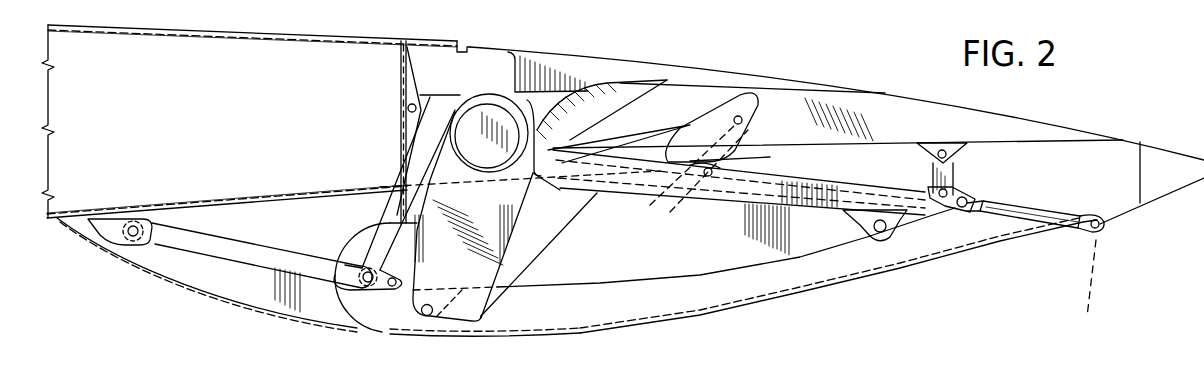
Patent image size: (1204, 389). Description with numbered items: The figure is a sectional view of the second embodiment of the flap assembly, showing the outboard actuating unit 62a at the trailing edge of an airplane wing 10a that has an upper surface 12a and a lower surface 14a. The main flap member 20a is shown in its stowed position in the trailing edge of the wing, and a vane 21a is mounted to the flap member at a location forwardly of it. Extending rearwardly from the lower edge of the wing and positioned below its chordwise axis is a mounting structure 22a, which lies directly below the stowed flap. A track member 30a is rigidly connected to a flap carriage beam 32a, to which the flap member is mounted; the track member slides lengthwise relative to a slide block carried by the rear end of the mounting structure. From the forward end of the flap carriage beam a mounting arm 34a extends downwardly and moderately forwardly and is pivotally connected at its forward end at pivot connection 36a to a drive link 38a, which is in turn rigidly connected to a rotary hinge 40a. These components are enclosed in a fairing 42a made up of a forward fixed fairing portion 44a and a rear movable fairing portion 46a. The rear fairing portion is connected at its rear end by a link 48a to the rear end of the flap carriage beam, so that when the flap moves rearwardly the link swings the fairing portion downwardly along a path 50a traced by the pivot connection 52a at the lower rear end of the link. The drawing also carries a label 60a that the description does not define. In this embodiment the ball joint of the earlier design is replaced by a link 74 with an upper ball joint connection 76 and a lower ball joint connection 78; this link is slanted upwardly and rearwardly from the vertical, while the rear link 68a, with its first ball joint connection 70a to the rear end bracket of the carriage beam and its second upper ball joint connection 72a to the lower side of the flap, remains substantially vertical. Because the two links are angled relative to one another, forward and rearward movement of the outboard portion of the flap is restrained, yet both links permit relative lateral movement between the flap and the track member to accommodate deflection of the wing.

The airplane wing 10a is at (283, 31).
The upper surface 12a is at (227, 31).
The lower surface 14a is at (317, 207).
The main flap member 20a is at (967, 110).
The vane 21a is at (573, 100).
The mounting structure 22a is at (620, 282).
The track member 30a is at (660, 197).
The flap carriage beam 32a is at (835, 180).
The mounting arm 34a is at (562, 229).
The pivot connection 36a is at (420, 323).
The drive link 38a is at (447, 182).
The rotary hinge 40a is at (477, 110).
The fairing 42a is at (549, 339).
The forward fixed fairing portion 44a is at (233, 303).
The rear movable fairing portion 46a is at (820, 293).
The link 48a is at (1047, 205).
The path 50a is at (1093, 287).
The pivot connection 52a is at (1103, 229).
The flap upper surface 60a is at (622, 61).
The outboard actuating unit 62a is at (700, 283).
The rear link 68a is at (953, 172).
The first ball joint connection 70a is at (950, 215).
The second upper ball joint connection 72a is at (955, 157).
The link 74 is at (767, 158).
The upper ball joint connection 76 is at (738, 115).
The lower ball joint connection 78 is at (708, 178).